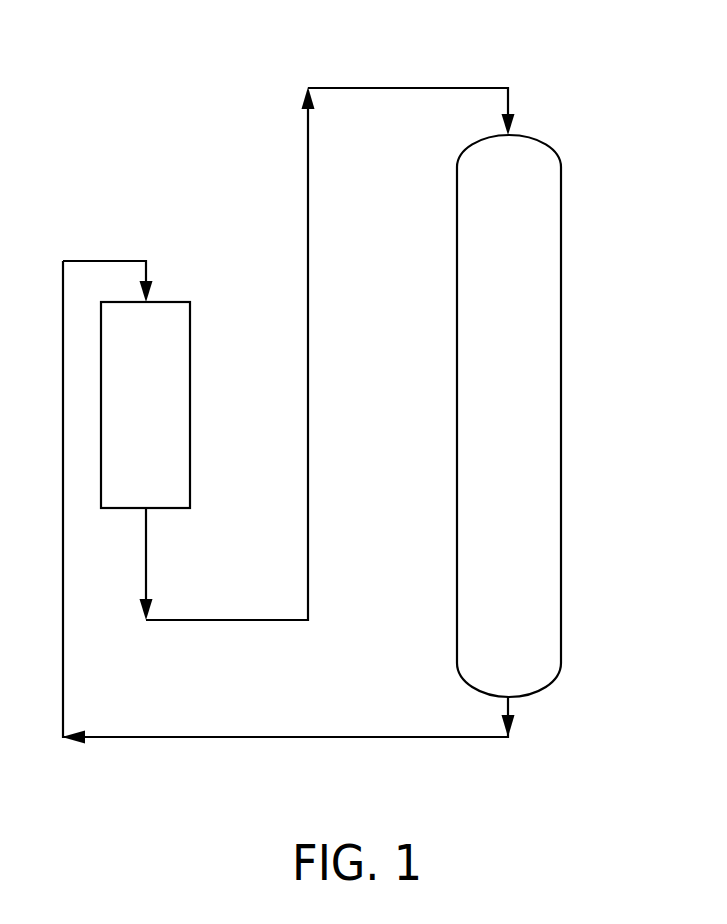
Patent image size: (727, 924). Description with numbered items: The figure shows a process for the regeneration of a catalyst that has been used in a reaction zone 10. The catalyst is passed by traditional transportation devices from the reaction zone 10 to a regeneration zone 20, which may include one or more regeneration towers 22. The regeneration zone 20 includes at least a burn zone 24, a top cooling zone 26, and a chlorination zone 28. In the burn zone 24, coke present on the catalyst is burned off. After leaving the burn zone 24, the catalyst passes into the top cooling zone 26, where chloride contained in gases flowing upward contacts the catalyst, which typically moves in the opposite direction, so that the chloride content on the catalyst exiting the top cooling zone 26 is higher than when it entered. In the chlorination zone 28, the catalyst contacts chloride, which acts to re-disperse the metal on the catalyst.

The reaction zone 10 is at (100, 252).
The regeneration zone 20 is at (542, 353).
The regeneration tower 22 is at (561, 513).
The burn zone 24 is at (575, 168).
The top cooling zone 26 is at (575, 225).
The chlorination zone 28 is at (575, 348).